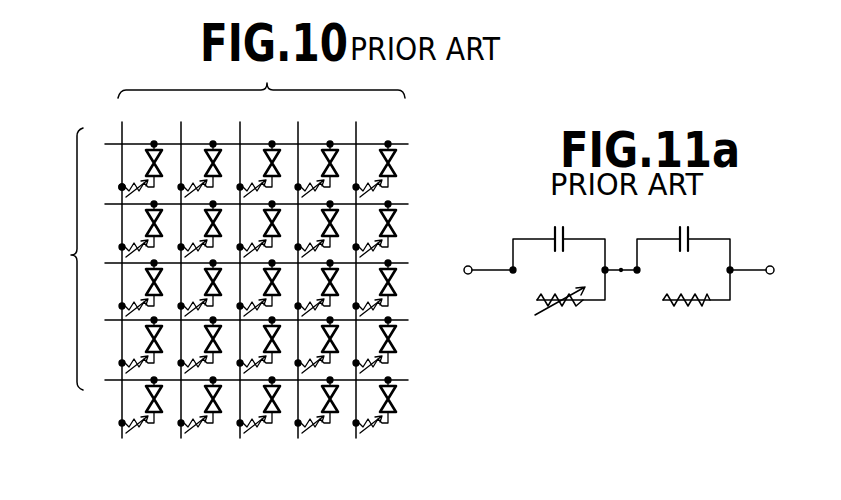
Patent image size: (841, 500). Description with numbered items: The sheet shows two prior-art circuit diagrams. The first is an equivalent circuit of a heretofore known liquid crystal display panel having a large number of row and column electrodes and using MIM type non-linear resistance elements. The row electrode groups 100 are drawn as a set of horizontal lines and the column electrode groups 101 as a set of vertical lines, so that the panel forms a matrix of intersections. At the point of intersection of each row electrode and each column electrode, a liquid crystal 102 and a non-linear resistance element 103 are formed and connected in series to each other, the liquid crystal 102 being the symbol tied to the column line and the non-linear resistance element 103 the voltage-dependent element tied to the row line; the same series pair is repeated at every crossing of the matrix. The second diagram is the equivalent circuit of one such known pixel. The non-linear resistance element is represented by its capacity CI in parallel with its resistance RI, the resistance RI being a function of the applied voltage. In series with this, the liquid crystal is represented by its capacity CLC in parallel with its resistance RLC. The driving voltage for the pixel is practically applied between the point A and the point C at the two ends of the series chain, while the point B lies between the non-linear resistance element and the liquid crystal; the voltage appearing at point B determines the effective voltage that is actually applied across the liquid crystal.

In FIG. 10, the row electrode groups 100 is at (58, 259).
In FIG. 10, the column electrode groups 101 is at (261, 78).
In FIG. 10, the liquid crystal 102 is at (161, 160).
In FIG. 10, the non-linear resistance element 103 is at (121, 185).
In FIG. 11A, the point A is at (463, 260).
In FIG. 11A, the point B is at (623, 257).
In FIG. 11A, the point C is at (774, 261).
In FIG. 11A, the capacity of the non-linear resistance element CI is at (553, 226).
In FIG. 11A, the resistance of the non-linear resistance element RI is at (560, 290).
In FIG. 11A, the capacity of the liquid crystal CLC is at (689, 226).
In FIG. 11A, the resistance of the liquid crystal RLC is at (686, 287).